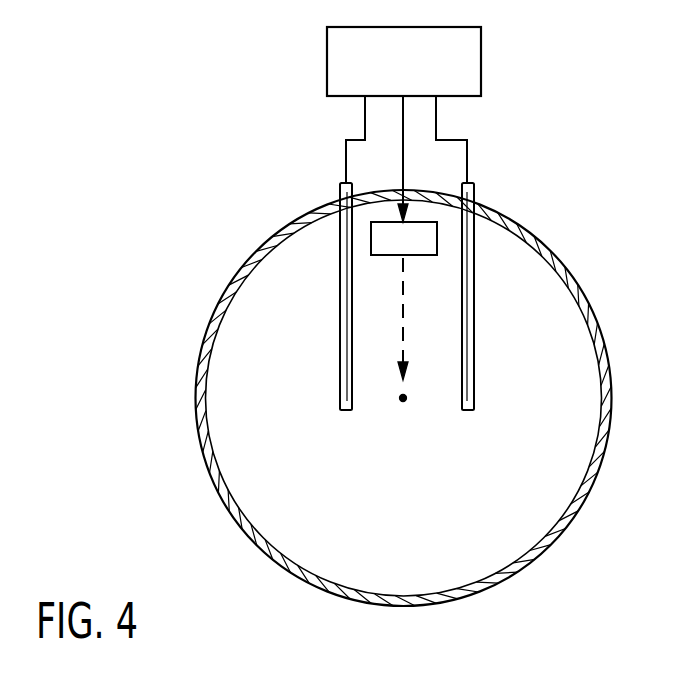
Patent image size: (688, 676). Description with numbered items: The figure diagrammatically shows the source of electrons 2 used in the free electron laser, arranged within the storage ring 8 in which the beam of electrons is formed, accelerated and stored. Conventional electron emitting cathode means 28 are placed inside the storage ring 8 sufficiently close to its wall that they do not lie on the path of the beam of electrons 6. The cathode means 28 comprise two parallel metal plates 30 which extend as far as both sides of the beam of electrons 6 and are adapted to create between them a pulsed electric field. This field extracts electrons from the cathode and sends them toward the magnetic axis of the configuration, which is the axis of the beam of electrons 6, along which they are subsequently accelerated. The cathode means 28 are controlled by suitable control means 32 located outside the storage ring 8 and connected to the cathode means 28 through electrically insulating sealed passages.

The source of electrons 2 is at (310, 103).
The beam of relativist electrons 6 is at (400, 402).
The storage ring 8 is at (567, 270).
The electron emitting cathode means 28 is at (356, 268).
The parallel metal plates 30 is at (348, 404).
The control means 32 is at (468, 69).